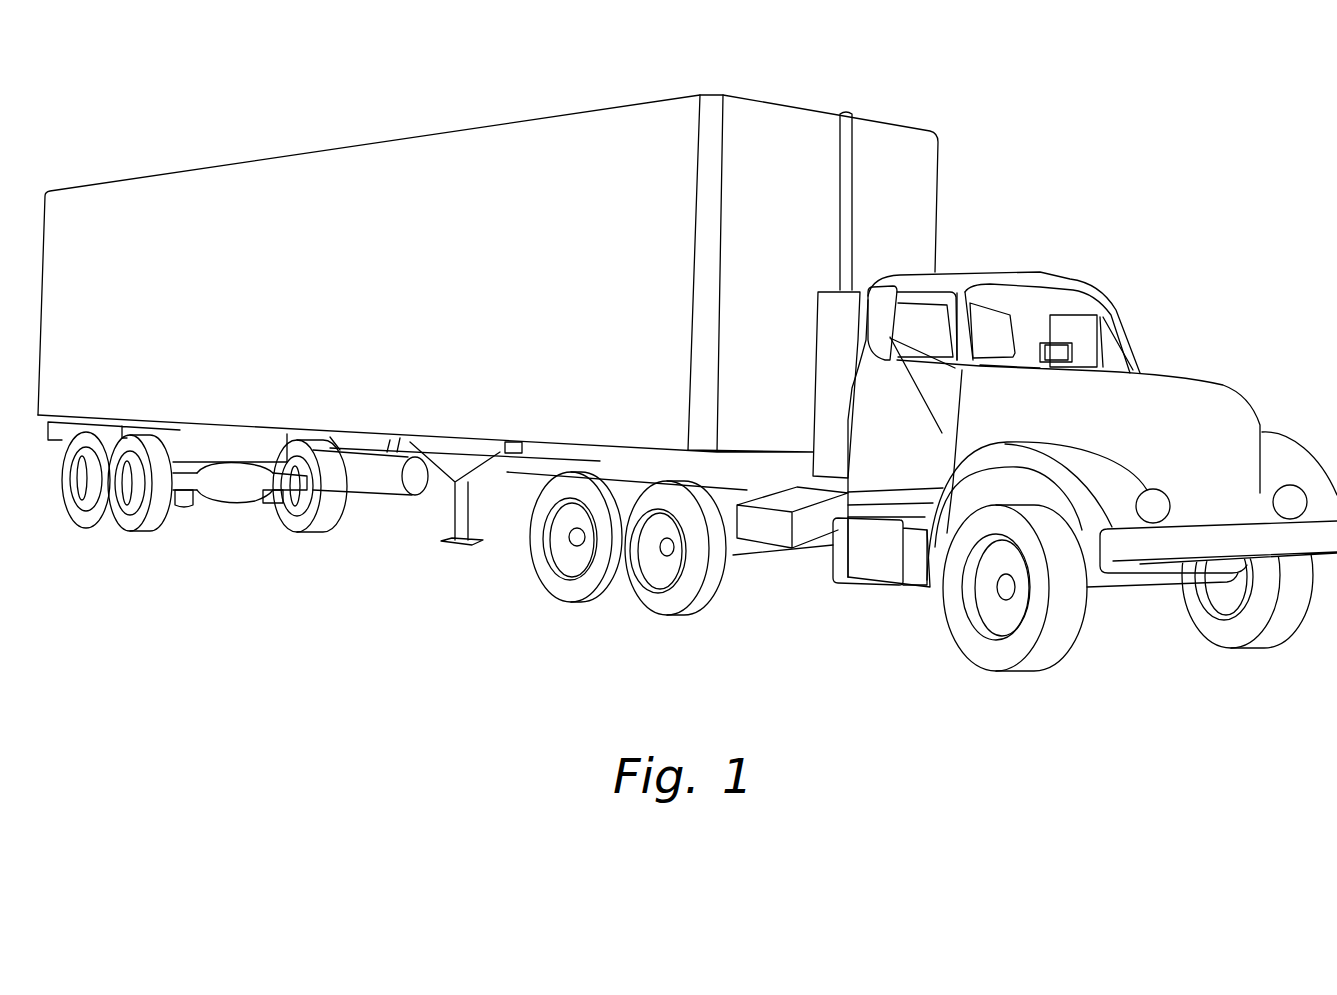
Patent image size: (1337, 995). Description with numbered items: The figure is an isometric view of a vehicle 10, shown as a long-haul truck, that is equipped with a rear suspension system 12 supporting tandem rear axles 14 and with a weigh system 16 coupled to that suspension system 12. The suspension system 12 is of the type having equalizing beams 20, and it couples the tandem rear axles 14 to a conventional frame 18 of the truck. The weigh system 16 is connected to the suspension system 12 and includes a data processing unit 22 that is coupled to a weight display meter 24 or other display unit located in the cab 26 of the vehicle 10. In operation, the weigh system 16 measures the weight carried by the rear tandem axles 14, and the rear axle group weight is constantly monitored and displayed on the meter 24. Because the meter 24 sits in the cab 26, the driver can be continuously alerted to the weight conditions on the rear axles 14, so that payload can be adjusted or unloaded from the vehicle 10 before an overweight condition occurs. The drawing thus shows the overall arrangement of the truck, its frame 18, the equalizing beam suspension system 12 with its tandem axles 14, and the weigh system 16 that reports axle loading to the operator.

The vehicle 10 is at (212, 82).
The rear suspension system 12 is at (222, 536).
The tandem rear axles 14 is at (170, 536).
The weigh system 16 is at (191, 536).
The frame 18 is at (513, 479).
The equalizing beams 20 is at (248, 534).
The data processing unit 22 is at (275, 536).
The weight display meter 24 is at (1074, 332).
The cab 26 is at (905, 280).